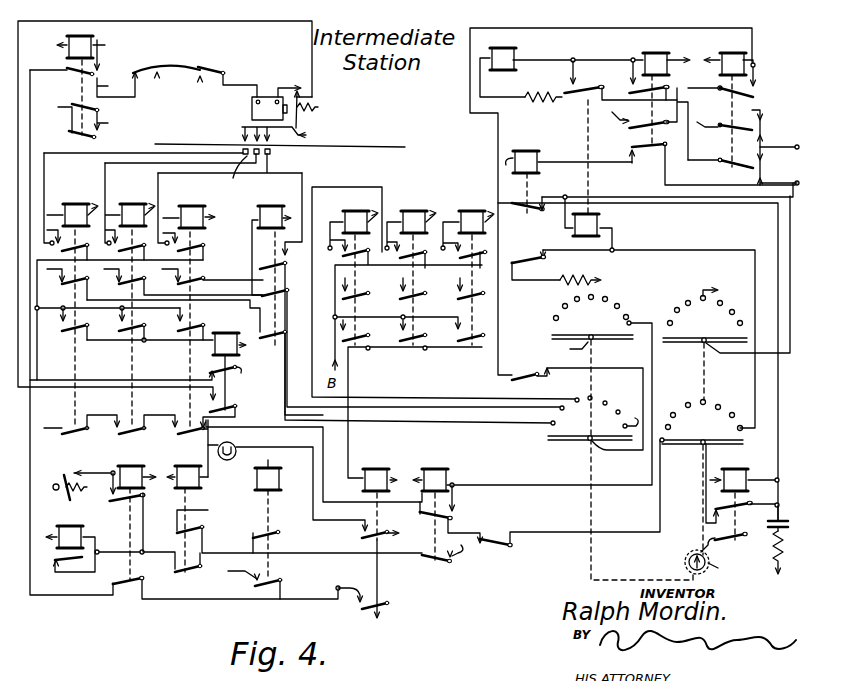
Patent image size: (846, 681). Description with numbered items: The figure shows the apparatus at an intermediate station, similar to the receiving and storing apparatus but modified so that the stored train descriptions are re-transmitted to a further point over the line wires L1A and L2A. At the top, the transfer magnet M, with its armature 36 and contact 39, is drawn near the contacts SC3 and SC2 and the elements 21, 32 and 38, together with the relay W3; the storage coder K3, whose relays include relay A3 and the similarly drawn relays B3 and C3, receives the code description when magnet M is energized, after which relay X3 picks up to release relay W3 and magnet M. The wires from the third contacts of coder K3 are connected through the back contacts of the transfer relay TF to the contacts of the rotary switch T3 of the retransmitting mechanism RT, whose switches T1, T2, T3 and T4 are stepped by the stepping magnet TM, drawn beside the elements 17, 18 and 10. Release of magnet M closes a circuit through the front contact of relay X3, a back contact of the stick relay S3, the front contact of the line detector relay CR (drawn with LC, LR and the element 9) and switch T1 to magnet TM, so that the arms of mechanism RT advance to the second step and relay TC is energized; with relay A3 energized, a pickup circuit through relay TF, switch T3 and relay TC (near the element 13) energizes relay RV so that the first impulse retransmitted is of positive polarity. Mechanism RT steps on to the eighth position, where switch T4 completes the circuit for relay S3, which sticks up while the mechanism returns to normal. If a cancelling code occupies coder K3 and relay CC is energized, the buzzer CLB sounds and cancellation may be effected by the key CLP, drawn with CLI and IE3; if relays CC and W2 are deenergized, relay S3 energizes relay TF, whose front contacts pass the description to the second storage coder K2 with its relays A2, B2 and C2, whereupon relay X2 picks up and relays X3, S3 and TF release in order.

The relay W3 is at (84, 91).
The contact SC3 is at (164, 69).
The contact SC2 is at (225, 72).
The transfer magnet M is at (281, 98).
The contact 39 is at (316, 105).
The armature 36 is at (316, 116).
The brushes 32 is at (264, 136).
The conductor 21 is at (185, 135).
The terminals 38 is at (173, 171).
The line detector relay CR is at (559, 289).
The resistor 9 is at (543, 89).
The relay LC is at (620, 156).
The relay LR is at (701, 109).
The relay RV is at (728, 109).
The line wire L2A is at (779, 138).
The line wire L1A is at (778, 173).
The relay TC is at (566, 253).
The resistor 13 is at (586, 273).
The relay A3 is at (78, 299).
The relay B3 is at (180, 304).
The relay C3 is at (209, 325).
The transfer relay TF is at (287, 299).
The relay X3 is at (225, 370).
The storage coder K3 is at (104, 361).
The second storage coder K2 is at (383, 380).
The relay A2 is at (358, 267).
The relay B2 is at (416, 267).
The relay C2 is at (468, 267).
The switch T4 is at (622, 438).
The rotary switch T3 is at (585, 424).
The stepping switch T2 is at (726, 298).
The switch T1 is at (697, 478).
The retransmitting mechanism RT is at (678, 535).
The stepping magnet TM is at (740, 499).
The condenser 17 is at (783, 516).
The resistor 18 is at (788, 556).
The motor 10 is at (711, 562).
The lamp IE3 is at (288, 479).
The key CLP is at (80, 476).
The relay CLI is at (137, 515).
The relay CC is at (294, 509).
The relay W2 is at (257, 522).
The relay X2 is at (362, 532).
The stick relay S3 is at (447, 504).
The buzzer CLB is at (65, 539).